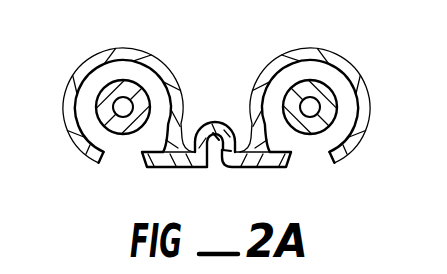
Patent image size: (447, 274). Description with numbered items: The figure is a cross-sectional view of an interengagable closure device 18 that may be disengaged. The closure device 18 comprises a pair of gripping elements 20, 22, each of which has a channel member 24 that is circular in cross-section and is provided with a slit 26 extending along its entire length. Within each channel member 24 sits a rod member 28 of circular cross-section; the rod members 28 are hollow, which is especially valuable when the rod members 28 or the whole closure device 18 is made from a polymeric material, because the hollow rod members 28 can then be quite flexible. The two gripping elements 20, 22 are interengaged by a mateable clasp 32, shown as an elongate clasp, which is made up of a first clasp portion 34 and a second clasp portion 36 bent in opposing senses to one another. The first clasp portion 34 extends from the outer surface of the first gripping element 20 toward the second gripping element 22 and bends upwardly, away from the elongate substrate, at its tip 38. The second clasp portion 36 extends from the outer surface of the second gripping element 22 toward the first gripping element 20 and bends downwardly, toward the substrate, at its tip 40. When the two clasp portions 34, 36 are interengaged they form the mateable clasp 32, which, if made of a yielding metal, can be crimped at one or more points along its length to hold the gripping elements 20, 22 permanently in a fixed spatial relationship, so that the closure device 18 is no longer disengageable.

The closure device 18 is at (235, 178).
The first gripping element 20 is at (364, 80).
The second gripping element 22 is at (70, 84).
The channel member 24 is at (73, 133).
The slit 26 is at (117, 160).
The rod member 28 is at (121, 80).
The mateable clasp 32 is at (207, 168).
The first clasp portion 34 is at (242, 128).
The second clasp portion 36 is at (190, 128).
The tip of first clasp portion 38 is at (209, 122).
The tip of second clasp portion 40 is at (223, 124).